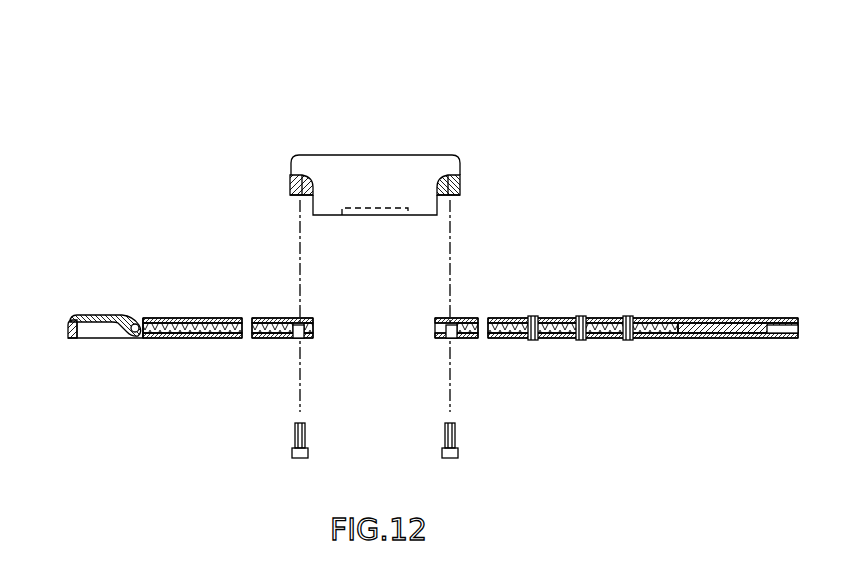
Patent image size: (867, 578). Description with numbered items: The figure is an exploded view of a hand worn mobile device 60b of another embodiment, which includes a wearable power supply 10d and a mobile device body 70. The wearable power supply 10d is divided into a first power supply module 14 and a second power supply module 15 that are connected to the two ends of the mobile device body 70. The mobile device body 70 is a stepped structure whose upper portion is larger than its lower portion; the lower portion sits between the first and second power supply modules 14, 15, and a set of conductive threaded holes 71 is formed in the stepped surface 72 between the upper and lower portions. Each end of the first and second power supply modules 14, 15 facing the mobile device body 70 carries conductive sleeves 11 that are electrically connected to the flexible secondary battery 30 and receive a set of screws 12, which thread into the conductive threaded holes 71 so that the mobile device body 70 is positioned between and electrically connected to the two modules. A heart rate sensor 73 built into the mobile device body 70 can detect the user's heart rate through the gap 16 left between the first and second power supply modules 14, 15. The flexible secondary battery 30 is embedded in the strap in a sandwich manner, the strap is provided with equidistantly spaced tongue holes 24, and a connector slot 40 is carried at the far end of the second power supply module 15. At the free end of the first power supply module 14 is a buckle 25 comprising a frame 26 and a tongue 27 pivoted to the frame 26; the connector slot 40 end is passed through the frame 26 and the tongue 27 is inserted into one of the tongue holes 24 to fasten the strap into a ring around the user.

The hand worn mobile device 60b is at (387, 162).
The mobile device body 70 is at (413, 165).
The conductive threaded holes 71 is at (293, 176).
The stepped surface 72 is at (300, 196).
The heart rate sensor 73 is at (380, 217).
The wearable power supply 10d is at (425, 309).
The first power supply module 14 is at (173, 318).
The second power supply module 15 is at (658, 318).
The flexible secondary battery 30 is at (188, 331).
The conductive sleeves 11 is at (296, 325).
The tongue holes 24 is at (533, 340).
The connector slot 40 is at (720, 324).
The buckle 25 is at (98, 270).
The frame 26 is at (72, 322).
The tongue 27 is at (103, 316).
The screws 12 is at (297, 437).
The gap 16 is at (390, 342).